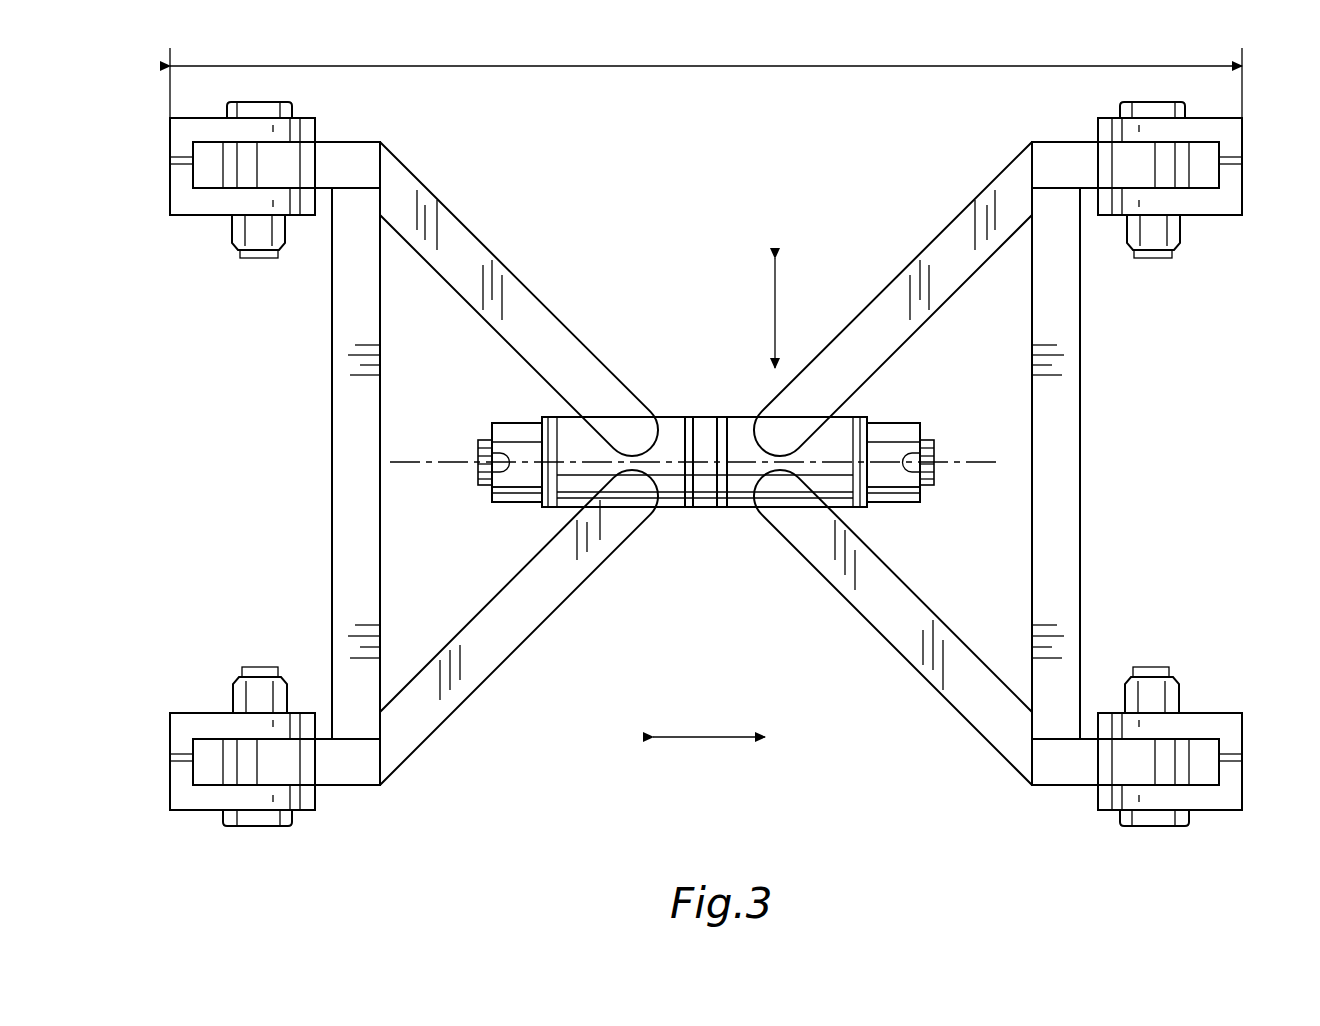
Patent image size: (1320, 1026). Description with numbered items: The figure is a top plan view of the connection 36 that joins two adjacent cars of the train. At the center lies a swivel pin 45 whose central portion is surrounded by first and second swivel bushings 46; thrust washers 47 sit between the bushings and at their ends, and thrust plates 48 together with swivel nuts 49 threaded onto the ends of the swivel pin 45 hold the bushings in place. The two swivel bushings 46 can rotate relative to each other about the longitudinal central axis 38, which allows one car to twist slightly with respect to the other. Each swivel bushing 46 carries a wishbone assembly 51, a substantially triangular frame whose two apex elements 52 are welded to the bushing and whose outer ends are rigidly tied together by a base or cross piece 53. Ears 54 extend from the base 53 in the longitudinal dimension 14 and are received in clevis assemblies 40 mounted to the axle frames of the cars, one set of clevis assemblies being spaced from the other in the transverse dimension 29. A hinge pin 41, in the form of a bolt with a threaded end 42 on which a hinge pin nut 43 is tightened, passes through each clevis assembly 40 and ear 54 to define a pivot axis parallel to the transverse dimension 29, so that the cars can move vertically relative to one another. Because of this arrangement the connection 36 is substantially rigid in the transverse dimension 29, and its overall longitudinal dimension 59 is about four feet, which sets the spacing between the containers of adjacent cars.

The longitudinal dimension 14 is at (693, 740).
The transverse dimension 29 is at (768, 318).
The connection 36 is at (853, 676).
The longitudinal central axis 38 is at (402, 464).
The clevis assembly 40 is at (213, 205).
The hinge pin 41 is at (1143, 272).
The threaded end 42 is at (1160, 258).
The hinge pin nut 43 is at (1177, 228).
The swivel pin 45 is at (480, 455).
The swivel bushing 46 is at (683, 418).
The thrust washer 47 is at (545, 510).
The thrust plate 48 is at (540, 417).
The swivel nut 49 is at (508, 505).
The wishbone assembly 51 is at (569, 597).
The apex element 52 is at (465, 248).
The base/cross piece 53 is at (1062, 462).
The ear 54 is at (1085, 145).
The longitudinal dimension of the connection 59 is at (592, 68).